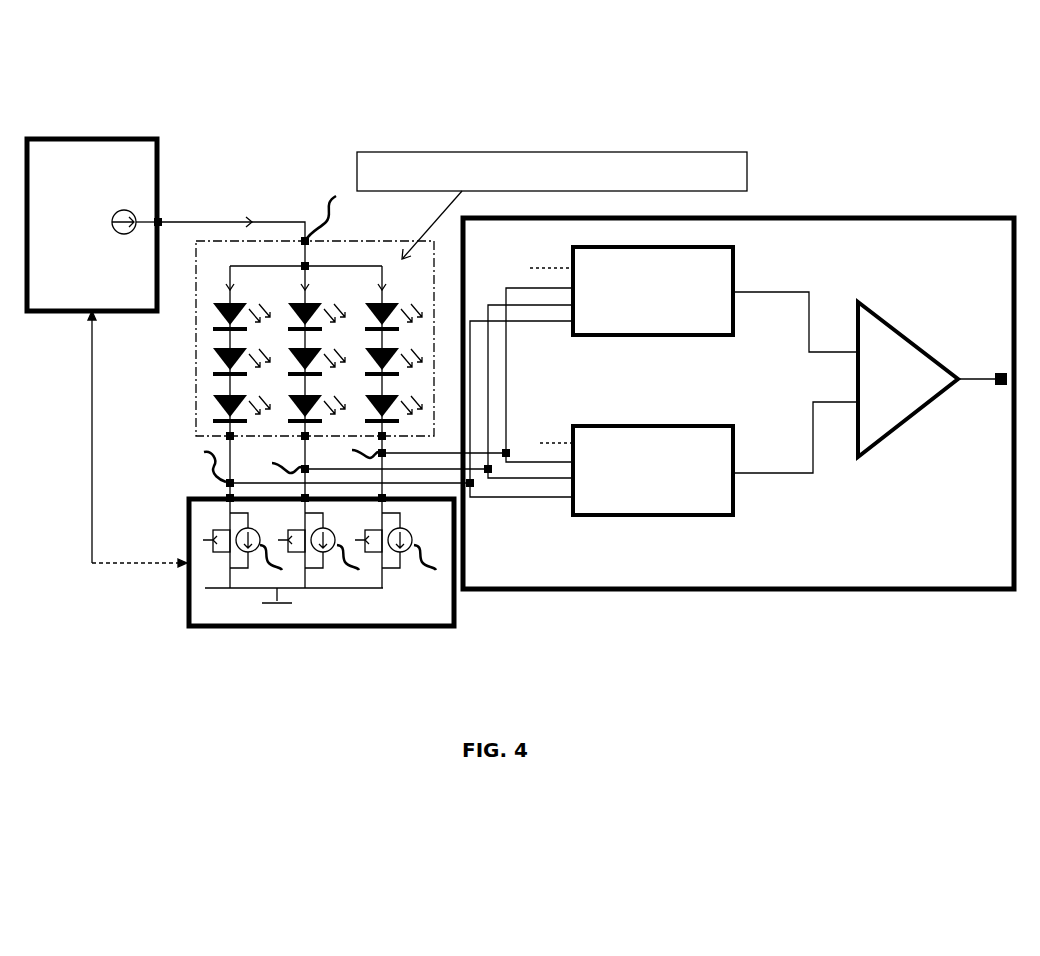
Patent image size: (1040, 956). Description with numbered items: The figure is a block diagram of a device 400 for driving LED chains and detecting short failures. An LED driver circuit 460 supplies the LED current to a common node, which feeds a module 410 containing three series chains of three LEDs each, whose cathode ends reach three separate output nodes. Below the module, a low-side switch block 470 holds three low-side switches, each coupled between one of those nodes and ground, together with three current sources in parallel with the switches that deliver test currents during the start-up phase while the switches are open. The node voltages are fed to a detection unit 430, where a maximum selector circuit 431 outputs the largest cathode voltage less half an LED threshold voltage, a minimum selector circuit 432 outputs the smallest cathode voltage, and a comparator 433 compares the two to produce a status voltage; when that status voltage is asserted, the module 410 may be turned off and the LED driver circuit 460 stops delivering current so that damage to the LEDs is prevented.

The device 400 is at (561, 45).
The LED driver circuit 460 is at (97, 138).
The module 410 is at (386, 243).
The low-side switch block 470 is at (242, 629).
The detection unit 430 is at (738, 427).
The maximum selector circuit 431 is at (642, 337).
The minimum selector circuit 432 is at (642, 517).
The comparator 433 is at (935, 405).